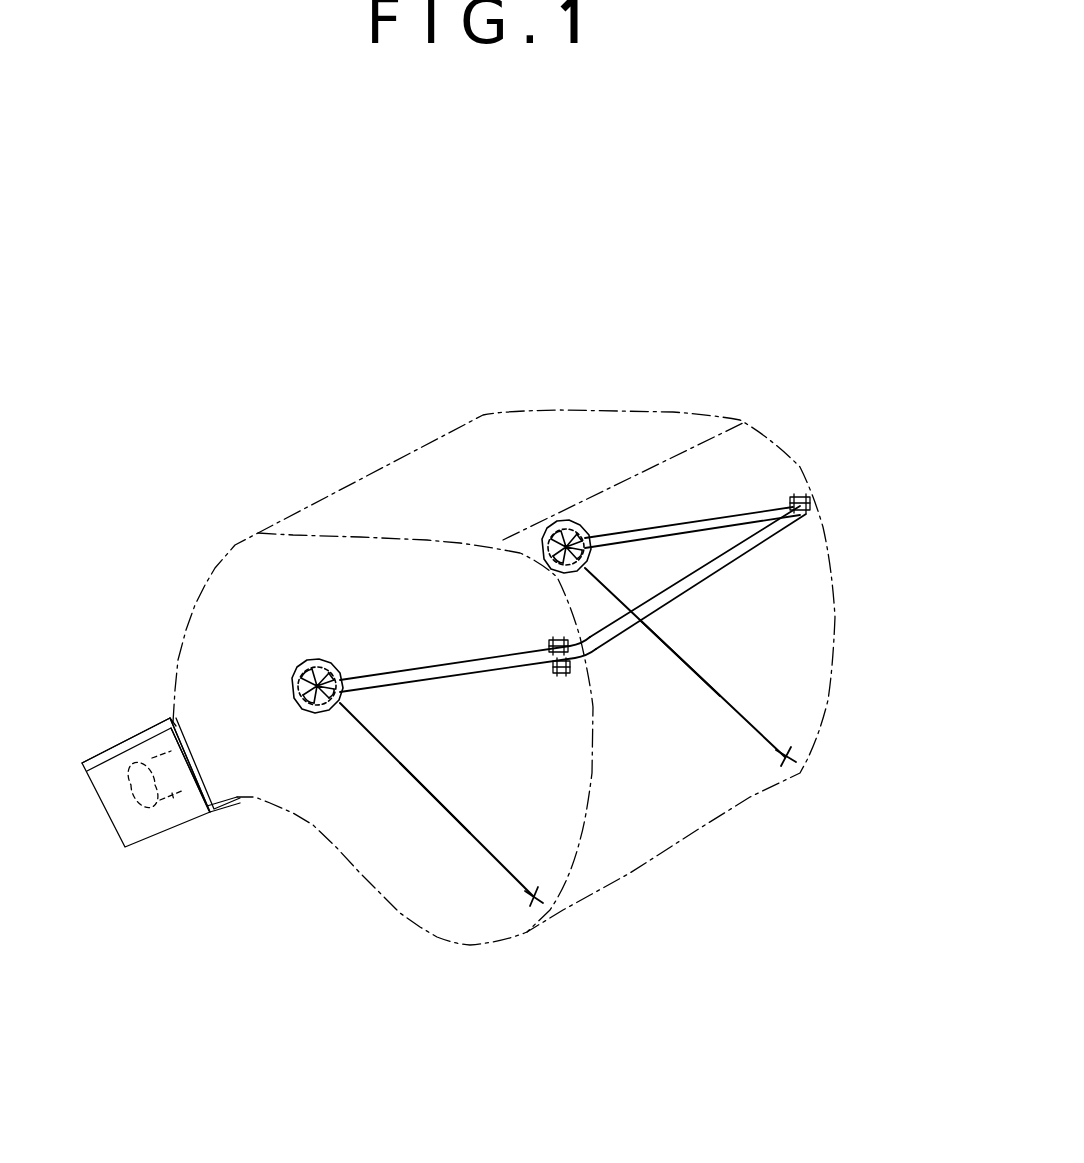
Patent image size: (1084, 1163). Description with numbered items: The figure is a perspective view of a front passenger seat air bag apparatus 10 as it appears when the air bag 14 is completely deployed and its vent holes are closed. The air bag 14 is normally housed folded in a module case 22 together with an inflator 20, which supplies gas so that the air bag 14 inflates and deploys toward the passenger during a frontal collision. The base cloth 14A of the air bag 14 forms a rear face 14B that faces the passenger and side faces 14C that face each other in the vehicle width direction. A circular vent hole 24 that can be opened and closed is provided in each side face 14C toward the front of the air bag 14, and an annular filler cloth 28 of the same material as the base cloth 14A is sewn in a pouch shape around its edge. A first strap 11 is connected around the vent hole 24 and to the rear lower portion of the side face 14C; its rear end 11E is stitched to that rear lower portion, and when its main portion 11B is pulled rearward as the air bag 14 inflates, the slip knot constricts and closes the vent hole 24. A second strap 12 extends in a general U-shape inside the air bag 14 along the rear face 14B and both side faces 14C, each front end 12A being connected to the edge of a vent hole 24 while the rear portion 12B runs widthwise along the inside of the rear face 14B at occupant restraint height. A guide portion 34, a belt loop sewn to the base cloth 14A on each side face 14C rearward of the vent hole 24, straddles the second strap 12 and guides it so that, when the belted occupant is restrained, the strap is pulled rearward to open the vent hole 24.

The front passenger seat air bag apparatus 10 is at (630, 340).
The first strap 11 is at (740, 718).
The main portion 11B is at (690, 668).
The rear end 11E is at (785, 762).
The second strap 12 is at (437, 667).
The front end 12A is at (590, 550).
The rear portion 12B is at (730, 565).
The air bag 14 is at (677, 405).
The base cloth 14A is at (530, 427).
The rear face 14B is at (818, 561).
The side face 14C is at (403, 580).
The inflator 20 is at (174, 800).
The module case 22 is at (130, 737).
The vent hole 24 is at (585, 520).
The filler cloth 28 is at (543, 523).
The guide portion 34 is at (792, 500).